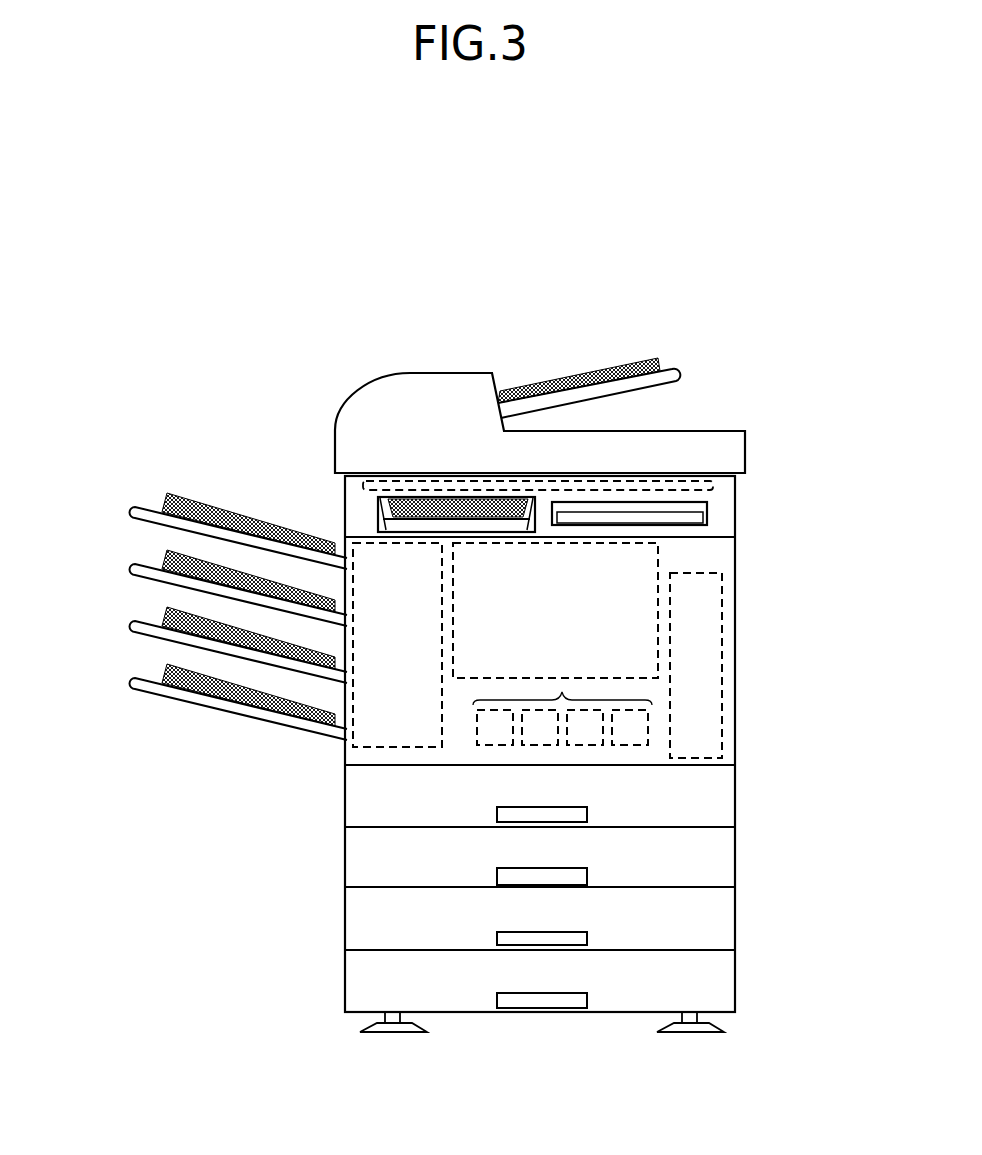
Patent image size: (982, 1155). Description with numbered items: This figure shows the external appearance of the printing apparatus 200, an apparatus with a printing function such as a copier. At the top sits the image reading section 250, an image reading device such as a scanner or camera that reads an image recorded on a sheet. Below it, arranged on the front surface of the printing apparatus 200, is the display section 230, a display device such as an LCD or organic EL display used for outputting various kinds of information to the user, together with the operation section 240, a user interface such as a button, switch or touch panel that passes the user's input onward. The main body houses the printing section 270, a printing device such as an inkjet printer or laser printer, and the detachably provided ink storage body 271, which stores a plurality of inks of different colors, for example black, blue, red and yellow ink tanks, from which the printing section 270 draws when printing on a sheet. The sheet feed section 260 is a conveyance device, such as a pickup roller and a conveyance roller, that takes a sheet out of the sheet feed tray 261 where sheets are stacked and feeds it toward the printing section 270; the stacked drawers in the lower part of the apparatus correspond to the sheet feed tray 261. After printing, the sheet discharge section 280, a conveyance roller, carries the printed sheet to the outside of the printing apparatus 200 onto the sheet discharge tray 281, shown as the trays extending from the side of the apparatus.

The printing apparatus 200 is at (577, 322).
The image reading section 250 is at (342, 478).
The display section 230 is at (378, 518).
The operation section 240 is at (710, 507).
The printing section 270 is at (658, 567).
The ink storage body 271 is at (562, 692).
The sheet feed section 260 is at (723, 722).
The sheet feed tray 261 is at (748, 768).
The sheet discharge section 280 is at (373, 748).
The sheet discharge tray 281 is at (118, 495).